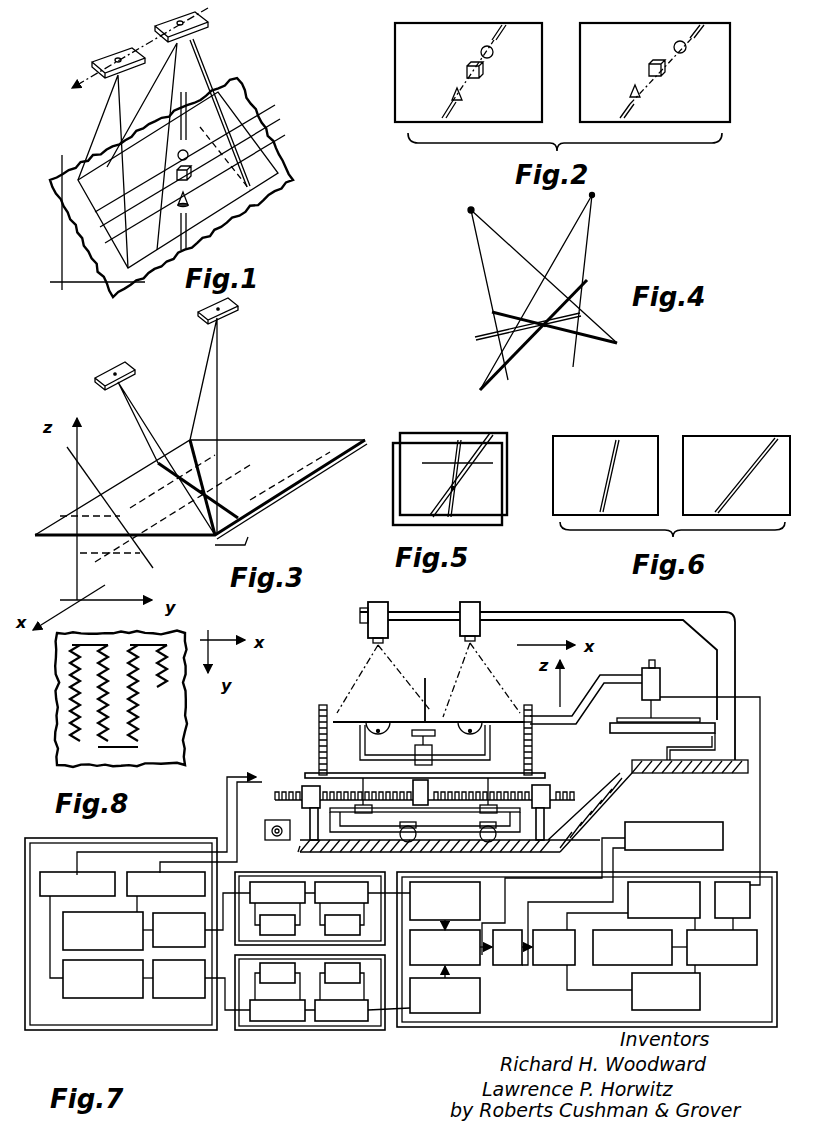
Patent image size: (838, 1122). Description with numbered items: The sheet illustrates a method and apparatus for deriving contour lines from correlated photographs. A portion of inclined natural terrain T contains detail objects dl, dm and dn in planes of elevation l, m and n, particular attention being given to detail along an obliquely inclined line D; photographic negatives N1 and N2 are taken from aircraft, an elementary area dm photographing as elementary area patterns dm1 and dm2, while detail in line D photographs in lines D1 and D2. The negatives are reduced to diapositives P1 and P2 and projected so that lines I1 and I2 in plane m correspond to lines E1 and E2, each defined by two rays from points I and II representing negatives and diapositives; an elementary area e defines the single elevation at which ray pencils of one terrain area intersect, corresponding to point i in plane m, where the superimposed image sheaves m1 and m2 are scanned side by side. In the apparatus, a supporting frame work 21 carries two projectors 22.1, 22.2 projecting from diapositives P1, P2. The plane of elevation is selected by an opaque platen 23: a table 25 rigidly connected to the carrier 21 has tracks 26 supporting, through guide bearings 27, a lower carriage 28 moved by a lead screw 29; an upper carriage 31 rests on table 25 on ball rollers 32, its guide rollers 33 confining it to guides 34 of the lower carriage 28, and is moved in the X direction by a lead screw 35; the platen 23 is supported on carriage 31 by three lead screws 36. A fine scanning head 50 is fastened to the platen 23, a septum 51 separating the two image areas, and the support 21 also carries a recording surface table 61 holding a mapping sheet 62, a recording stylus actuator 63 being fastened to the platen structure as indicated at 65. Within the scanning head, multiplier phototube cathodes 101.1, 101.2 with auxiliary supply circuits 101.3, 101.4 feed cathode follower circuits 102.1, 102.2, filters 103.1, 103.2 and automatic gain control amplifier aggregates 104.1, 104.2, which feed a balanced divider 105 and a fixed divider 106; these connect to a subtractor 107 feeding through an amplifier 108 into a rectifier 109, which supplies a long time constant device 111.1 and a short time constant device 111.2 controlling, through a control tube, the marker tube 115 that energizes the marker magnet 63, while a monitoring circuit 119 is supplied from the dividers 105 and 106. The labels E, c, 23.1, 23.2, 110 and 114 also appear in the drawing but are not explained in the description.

In FIG. 1, the photographic negative N1 is at (95, 55).
In FIG. 2, the photographic negative N1 is at (454, 71).
In FIG. 1, the photographic negative N2 is at (158, 22).
In FIG. 2, the photographic negative N2 is at (646, 71).
In FIG. 1, the terrain T is at (291, 157).
In FIG. 1, the obliquely inclined line D is at (186, 233).
In FIG. 1, the detail object dl is at (178, 155).
In FIG. 1, the elementary area dm is at (190, 173).
In FIG. 1, the detail object dn is at (188, 200).
In FIG. 1, the plane of elevation l is at (107, 212).
In FIG. 3, the plane of elevation l is at (52, 514).
In FIG. 1, the plane of elevation m is at (107, 227).
In FIG. 3, the plane of elevation m is at (63, 553).
In FIG. 1, the plane of elevation n is at (107, 243).
In FIG. 3, the plane of elevation n is at (67, 563).
In FIG. 2, the line of negative D1 is at (445, 110).
In FIG. 4, the line of negative D1 is at (490, 233).
In FIG. 2, the line of negative D2 is at (625, 110).
In FIG. 4, the line of negative D2 is at (580, 228).
In FIG. 2, the elementary area pattern dm1 is at (481, 78).
In FIG. 2, the elementary area pattern dm2 is at (663, 72).
In FIG. 4, the point I is at (478, 206).
In FIG. 4, the point II is at (601, 201).
In FIG. 4, the mean plane E is at (476, 336).
In FIG. 4, the line E1 is at (570, 350).
In FIG. 4, the line E2 is at (500, 360).
In FIG. 4, the elementary area e is at (545, 324).
In FIG. 3, the diapositive P1 is at (105, 368).
In FIG. 3, the diapositive P2 is at (232, 316).
In FIG. 3, the line I1 is at (248, 522).
In FIG. 5, the line I1 is at (438, 504).
In FIG. 6, the line I1 is at (606, 478).
In FIG. 3, the line I2 is at (225, 440).
In FIG. 5, the line I2 is at (452, 496).
In FIG. 6, the line I2 is at (735, 482).
In FIG. 3, the image sheave m1 is at (318, 470).
In FIG. 6, the image sheave m1 is at (632, 445).
In FIG. 3, the image sheave m2 is at (318, 490).
In FIG. 6, the image sheave m2 is at (730, 445).
In FIG. 3, the screen / pattern carrier c is at (292, 466).
In FIG. 8, the screen / pattern carrier c is at (185, 720).
In FIG. 3, the point i is at (200, 492).
In FIG. 5, the point i is at (450, 487).
In FIG. 5, the X direction X is at (433, 460).
In FIG. 7, the supporting frame work 21 is at (712, 612).
In FIG. 7, the projector 22.1 is at (388, 610).
In FIG. 7, the projector 22.2 is at (479, 606).
In FIG. 7, the opaque platen 23 is at (358, 718).
In FIG. 7, the first pickup 23.1 is at (380, 720).
In FIG. 7, the second pickup 23.2 is at (470, 720).
In FIG. 7, the table 25 is at (298, 852).
In FIG. 7, the tracks 26 is at (545, 822).
In FIG. 7, the guide bearings 27 is at (310, 830).
In FIG. 7, the lower carriage 28 is at (300, 797).
In FIG. 7, the lead screw 29 is at (265, 833).
In FIG. 7, the upper carriage 31 is at (333, 778).
In FIG. 7, the ball rollers 32 is at (410, 843).
In FIG. 7, the guide rollers 33 is at (368, 820).
In FIG. 7, the guides 34 is at (460, 820).
In FIG. 7, the lead screw 35 is at (284, 790).
In FIG. 7, the lead screws 36 is at (318, 742).
In FIG. 7, the fine scanning head 50 is at (432, 735).
In FIG. 7, the septum 51 is at (445, 668).
In FIG. 7, the recording surface table 61 is at (634, 734).
In FIG. 7, the mapping sheet 62 is at (675, 718).
In FIG. 7, the recording stylus actuator 63 is at (653, 680).
In FIG. 7, the fastening of stylus actuator 65 is at (586, 713).
In FIG. 7, the cathode 101.1 is at (395, 722).
In FIG. 7, the cathode 101.2 is at (482, 722).
In FIG. 7, the auxiliary supply circuit 101.3 is at (73, 916).
In FIG. 7, the auxiliary supply circuit 101.4 is at (162, 883).
In FIG. 7, the cathode follower circuit 102.1 is at (108, 923).
In FIG. 7, the cathode follower circuit 102.2 is at (108, 991).
In FIG. 7, the filter 103.1 is at (201, 920).
In FIG. 7, the filter 103.2 is at (201, 990).
In FIG. 7, the automatic gain control amplifier aggregate 104.1 is at (322, 900).
In FIG. 7, the automatic gain control amplifier aggregate 104.2 is at (355, 1030).
In FIG. 7, the balanced divider 105 is at (485, 892).
In FIG. 7, the fixed divider 106 is at (482, 1005).
In FIG. 7, the subtractor 107 is at (484, 962).
In FIG. 7, the amplifier 108 is at (516, 966).
In FIG. 7, the rectifier 109 is at (560, 931).
In FIG. 7, the 10-20 kc oscillator 110 is at (612, 966).
In FIG. 7, the long time constant device 111.1 is at (692, 882).
In FIG. 7, the short time constant device 111.2 is at (700, 985).
In FIG. 7, the control tube 114 is at (712, 966).
In FIG. 7, the marker tube 115 is at (758, 880).
In FIG. 7, the monitoring circuit 119 is at (682, 824).